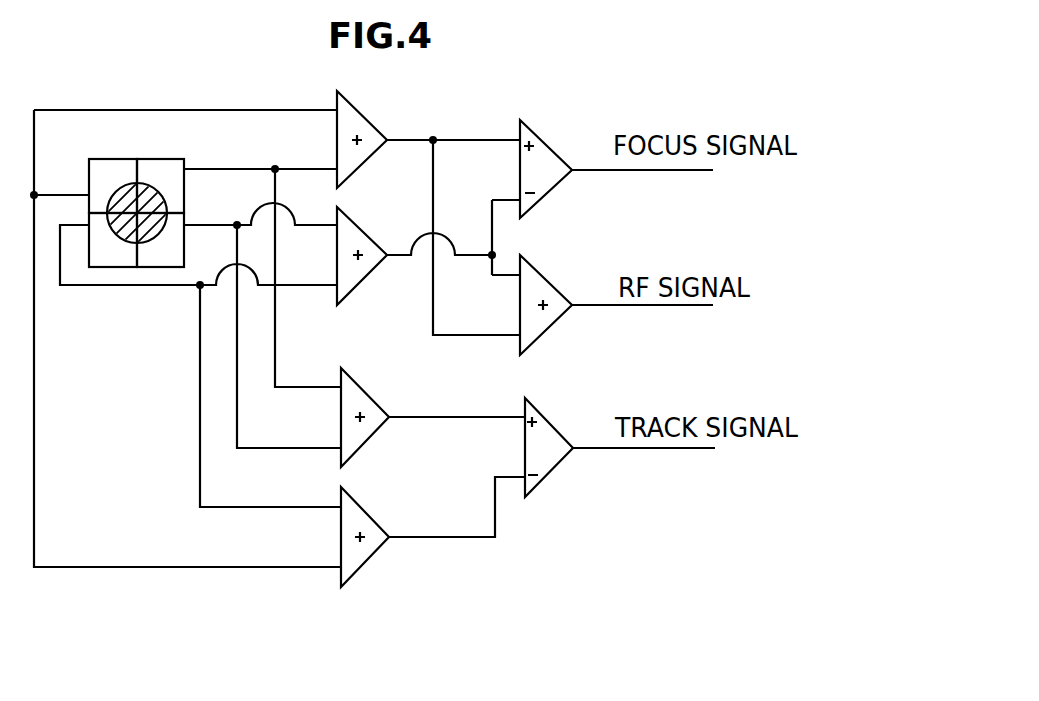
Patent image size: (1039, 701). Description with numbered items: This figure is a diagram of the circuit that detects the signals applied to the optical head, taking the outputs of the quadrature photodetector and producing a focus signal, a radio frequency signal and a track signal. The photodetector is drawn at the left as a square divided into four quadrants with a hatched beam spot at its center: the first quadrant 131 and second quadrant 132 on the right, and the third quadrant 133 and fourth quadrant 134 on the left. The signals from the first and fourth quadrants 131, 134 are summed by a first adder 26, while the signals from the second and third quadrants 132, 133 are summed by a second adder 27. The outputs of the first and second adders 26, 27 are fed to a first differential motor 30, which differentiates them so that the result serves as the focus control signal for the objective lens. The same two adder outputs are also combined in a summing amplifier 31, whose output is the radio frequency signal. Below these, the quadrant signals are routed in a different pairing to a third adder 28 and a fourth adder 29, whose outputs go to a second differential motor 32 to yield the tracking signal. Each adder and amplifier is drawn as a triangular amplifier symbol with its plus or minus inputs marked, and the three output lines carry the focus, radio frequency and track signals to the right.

The first quadrant 131 is at (158, 167).
The second quadrant 132 is at (163, 257).
The third quadrant 133 is at (117, 260).
The fourth quadrant 134 is at (110, 172).
The first adder 26 is at (360, 118).
The second adder 27 is at (360, 270).
The third adder 28 is at (358, 402).
The fourth adder 29 is at (362, 548).
The first differential motor 30 is at (547, 155).
The summing amplifier 31 is at (547, 290).
The second differential motor 32 is at (543, 440).